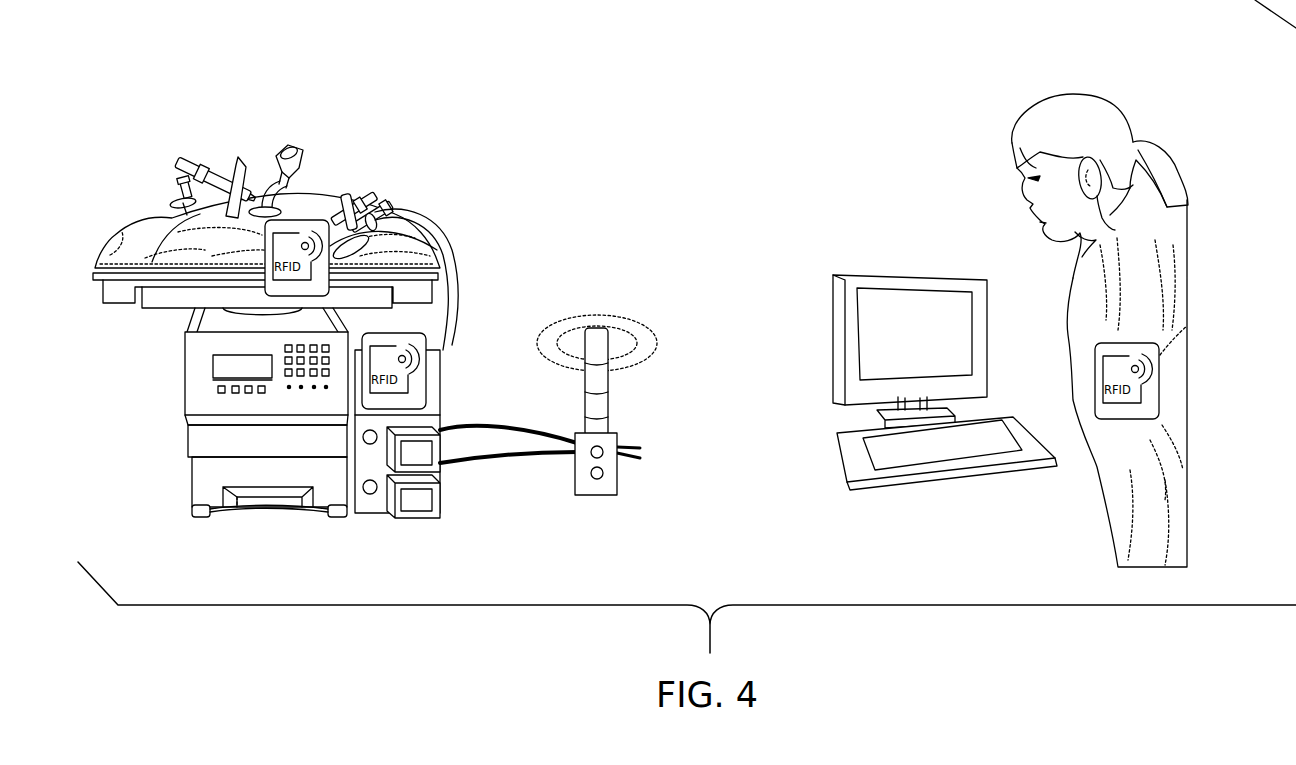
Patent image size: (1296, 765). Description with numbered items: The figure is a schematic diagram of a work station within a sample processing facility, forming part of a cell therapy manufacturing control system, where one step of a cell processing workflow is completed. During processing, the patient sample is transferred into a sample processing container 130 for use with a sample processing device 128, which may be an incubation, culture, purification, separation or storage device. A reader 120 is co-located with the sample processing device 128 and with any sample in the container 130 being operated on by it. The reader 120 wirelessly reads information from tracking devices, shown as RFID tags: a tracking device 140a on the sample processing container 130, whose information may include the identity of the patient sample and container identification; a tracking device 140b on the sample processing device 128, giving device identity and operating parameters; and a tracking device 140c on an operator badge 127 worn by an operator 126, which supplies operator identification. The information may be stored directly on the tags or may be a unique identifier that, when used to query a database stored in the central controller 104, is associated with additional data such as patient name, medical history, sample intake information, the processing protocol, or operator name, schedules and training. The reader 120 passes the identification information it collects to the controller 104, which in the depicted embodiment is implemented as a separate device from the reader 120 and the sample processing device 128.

The central controller 104 is at (965, 277).
The reader 120 is at (668, 392).
The operator 126 is at (1110, 96).
The operator badge 127 is at (1160, 396).
The sample processing device 128 is at (163, 420).
The sample processing container 130 is at (140, 220).
The tracking device 140a is at (283, 237).
The tracking device 140b is at (427, 385).
The tracking device 140c is at (1110, 419).